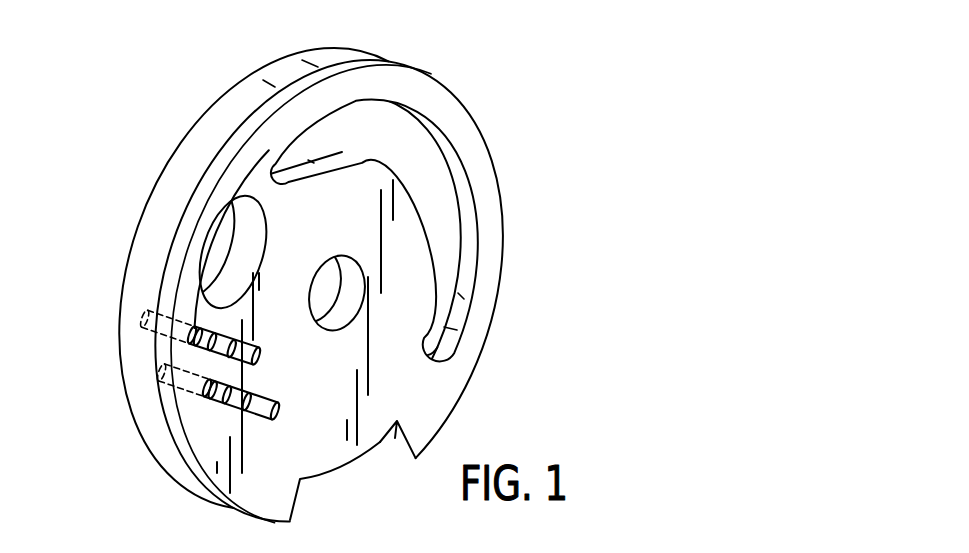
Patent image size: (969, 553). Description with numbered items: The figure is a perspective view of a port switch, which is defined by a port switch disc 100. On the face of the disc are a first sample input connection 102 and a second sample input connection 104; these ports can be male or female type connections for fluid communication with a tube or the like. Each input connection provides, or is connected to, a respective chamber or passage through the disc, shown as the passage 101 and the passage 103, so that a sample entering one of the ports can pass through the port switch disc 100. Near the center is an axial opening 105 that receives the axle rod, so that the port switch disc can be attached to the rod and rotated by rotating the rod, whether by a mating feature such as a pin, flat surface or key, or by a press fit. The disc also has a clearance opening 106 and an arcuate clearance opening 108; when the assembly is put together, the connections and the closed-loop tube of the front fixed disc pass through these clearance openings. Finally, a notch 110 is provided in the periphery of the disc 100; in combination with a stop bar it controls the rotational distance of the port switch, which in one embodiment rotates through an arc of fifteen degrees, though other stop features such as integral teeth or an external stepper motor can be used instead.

The port switch disc 100 is at (520, 63).
The passage 101 is at (168, 410).
The first sample input connection 102 is at (243, 410).
The passage 103 is at (162, 312).
The second sample input connection 104 is at (213, 352).
The axial opening 105 is at (347, 295).
The clearance opening 106 is at (218, 237).
The clearance opening 108 is at (477, 199).
The notch 110 is at (396, 437).